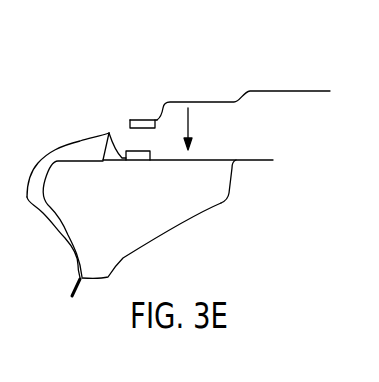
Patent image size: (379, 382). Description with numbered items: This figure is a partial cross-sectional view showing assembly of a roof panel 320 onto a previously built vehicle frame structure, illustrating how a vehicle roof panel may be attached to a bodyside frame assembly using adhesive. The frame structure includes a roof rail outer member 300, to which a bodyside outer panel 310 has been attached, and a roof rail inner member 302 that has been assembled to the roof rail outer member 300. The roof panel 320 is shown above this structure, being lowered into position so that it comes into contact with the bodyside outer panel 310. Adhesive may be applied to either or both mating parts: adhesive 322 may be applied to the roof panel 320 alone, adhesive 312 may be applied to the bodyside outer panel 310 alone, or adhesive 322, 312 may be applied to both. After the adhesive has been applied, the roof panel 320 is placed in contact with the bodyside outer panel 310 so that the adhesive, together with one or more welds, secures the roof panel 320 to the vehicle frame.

The roof rail outer member 300 is at (109, 133).
The roof rail inner member 302 is at (221, 204).
The bodyside outer panel 310 is at (65, 147).
The adhesive 312 is at (137, 160).
The roof panel 320 is at (282, 91).
The adhesive 322 is at (142, 121).